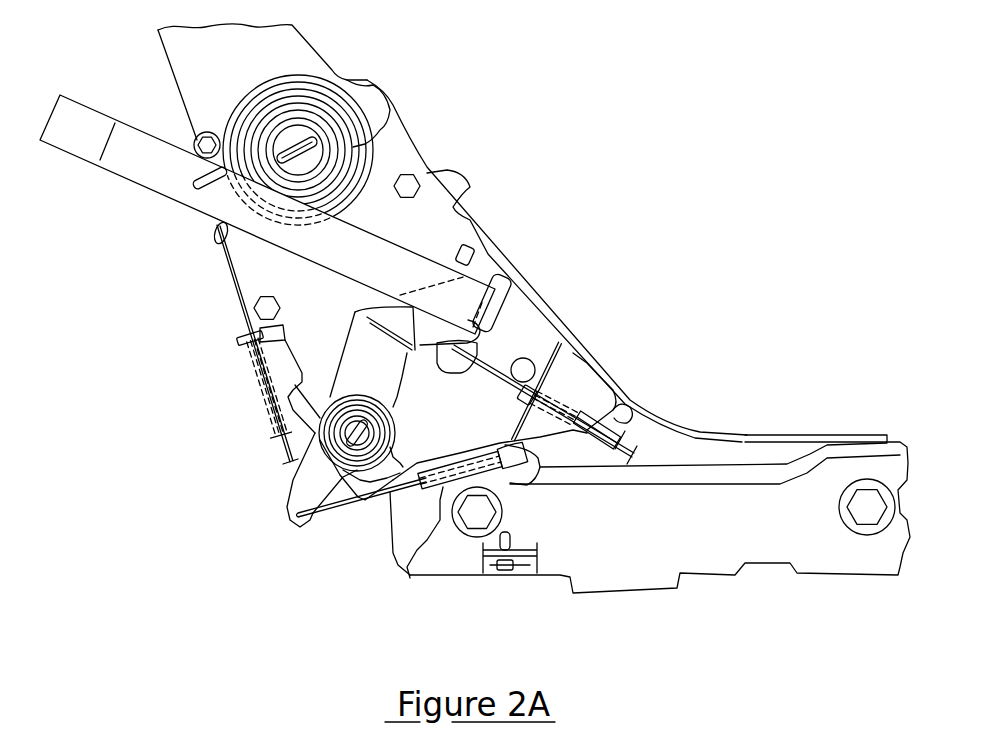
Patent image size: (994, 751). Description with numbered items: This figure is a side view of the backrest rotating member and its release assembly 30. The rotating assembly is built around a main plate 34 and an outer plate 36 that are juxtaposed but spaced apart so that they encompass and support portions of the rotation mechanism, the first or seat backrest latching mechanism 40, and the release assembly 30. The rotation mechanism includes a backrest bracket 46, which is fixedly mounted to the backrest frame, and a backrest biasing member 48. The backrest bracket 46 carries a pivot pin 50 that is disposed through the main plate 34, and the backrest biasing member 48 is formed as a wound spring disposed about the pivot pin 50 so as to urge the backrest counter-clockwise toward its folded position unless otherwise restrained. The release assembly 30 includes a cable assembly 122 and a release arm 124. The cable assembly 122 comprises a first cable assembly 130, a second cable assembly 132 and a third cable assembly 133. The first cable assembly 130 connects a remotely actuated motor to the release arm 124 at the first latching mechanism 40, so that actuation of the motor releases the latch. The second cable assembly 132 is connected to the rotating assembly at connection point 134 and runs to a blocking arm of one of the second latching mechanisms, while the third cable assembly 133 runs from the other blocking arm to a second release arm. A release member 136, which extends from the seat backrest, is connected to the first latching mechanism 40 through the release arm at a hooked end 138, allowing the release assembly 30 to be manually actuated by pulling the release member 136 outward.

The release assembly 30 is at (255, 433).
The main plate 34 is at (742, 435).
The outer plate 36 is at (643, 413).
The first latching mechanism 40 is at (507, 223).
The backrest bracket 46 is at (410, 163).
The backrest biasing member 48 is at (373, 147).
The pivot pin 50 is at (300, 125).
The cable assembly 122 is at (257, 498).
The release arm 124 is at (292, 527).
The first cable assembly 130 is at (410, 578).
The second cable assembly 132 is at (265, 395).
The third cable assembly 133 is at (567, 403).
The connection point 134 is at (217, 223).
The release member 136 is at (125, 180).
The hooked end 138 is at (527, 306).